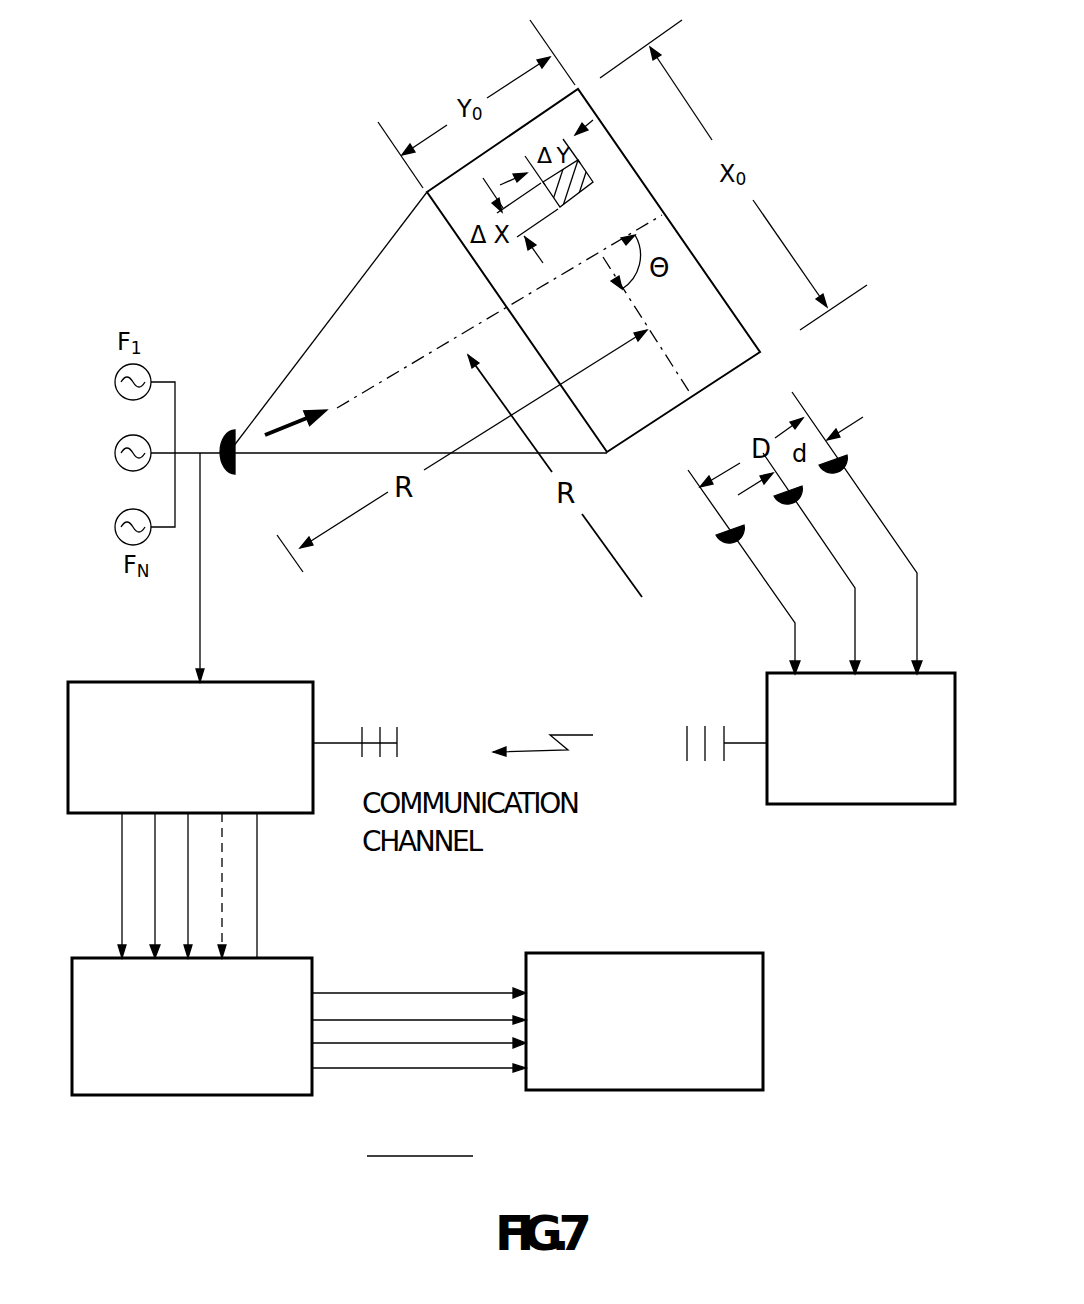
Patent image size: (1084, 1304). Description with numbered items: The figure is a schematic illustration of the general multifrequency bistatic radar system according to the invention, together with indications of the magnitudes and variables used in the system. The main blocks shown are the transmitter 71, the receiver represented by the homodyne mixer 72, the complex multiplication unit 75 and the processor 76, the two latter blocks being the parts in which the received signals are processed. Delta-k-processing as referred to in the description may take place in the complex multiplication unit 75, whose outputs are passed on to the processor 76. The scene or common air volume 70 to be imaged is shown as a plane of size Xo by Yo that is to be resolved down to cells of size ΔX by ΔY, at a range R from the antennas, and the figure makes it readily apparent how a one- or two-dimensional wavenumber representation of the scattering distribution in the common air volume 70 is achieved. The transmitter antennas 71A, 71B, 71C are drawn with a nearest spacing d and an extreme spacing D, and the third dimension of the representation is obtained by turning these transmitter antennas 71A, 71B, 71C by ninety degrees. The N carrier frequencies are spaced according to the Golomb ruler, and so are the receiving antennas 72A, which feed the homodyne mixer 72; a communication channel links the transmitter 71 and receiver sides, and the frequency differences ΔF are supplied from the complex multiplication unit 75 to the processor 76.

The common air volume 70 is at (763, 363).
The transmitter 71 is at (873, 808).
The transmitter antenna 71A is at (725, 547).
The transmitter antenna 71B is at (785, 510).
The transmitter antenna 71C is at (847, 452).
The homodyne mixer 72 is at (140, 680).
The receiving antenna 72A is at (225, 432).
The complex multiplication unit 75 is at (182, 1097).
The processor 76 is at (763, 1024).